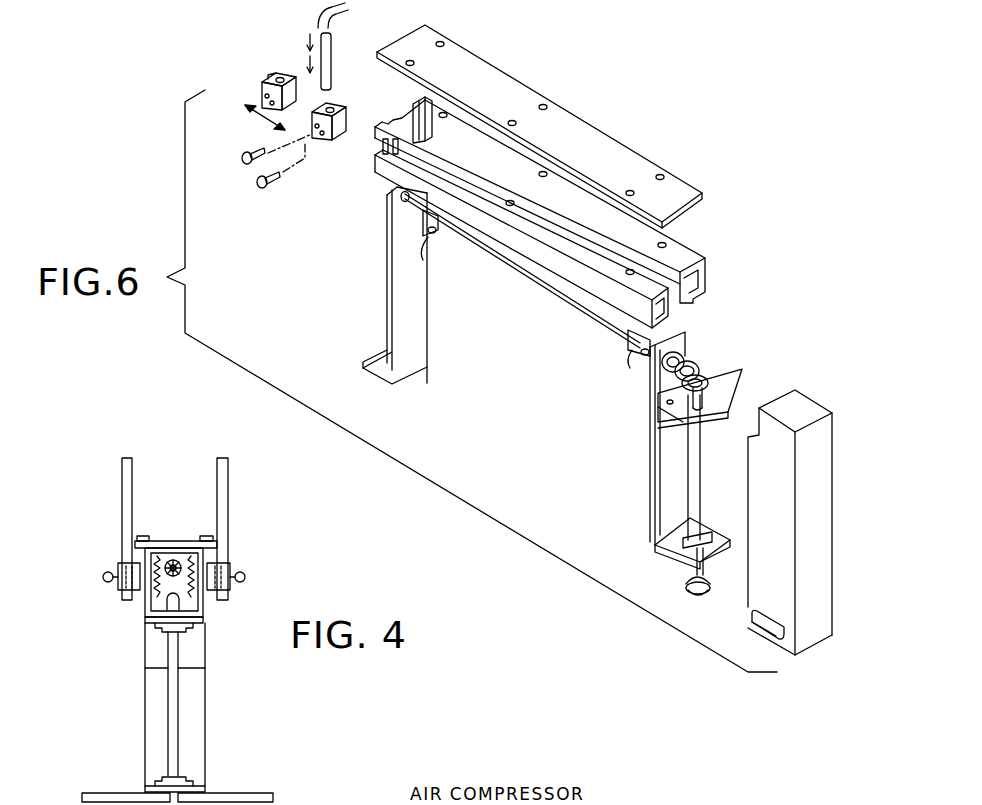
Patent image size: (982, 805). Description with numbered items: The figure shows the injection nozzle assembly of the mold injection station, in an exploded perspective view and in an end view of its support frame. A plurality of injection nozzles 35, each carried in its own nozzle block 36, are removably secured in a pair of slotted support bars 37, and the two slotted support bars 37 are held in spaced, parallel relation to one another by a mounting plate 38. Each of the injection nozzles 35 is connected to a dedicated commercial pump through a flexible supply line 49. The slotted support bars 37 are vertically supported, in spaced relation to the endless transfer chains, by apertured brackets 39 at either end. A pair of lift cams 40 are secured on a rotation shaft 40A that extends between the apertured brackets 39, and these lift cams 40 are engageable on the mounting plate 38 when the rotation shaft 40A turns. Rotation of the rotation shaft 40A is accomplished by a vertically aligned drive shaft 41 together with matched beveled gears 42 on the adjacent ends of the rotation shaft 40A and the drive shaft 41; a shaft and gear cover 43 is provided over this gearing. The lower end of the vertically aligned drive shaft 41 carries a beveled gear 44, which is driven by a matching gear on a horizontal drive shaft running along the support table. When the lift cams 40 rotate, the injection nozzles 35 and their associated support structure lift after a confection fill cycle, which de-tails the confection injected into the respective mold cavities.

In FIG. 6, the injection nozzle 35 is at (336, 48).
In FIG. 4, the injection nozzle 35 is at (226, 597).
In FIG. 6, the nozzle block 36 is at (262, 82).
In FIG. 4, the nozzle block 36 is at (222, 565).
In FIG. 6, the slotted support bar 37 is at (382, 167).
In FIG. 4, the slotted support bar 37 is at (138, 556).
In FIG. 6, the mounting plate 38 is at (598, 125).
In FIG. 4, the mounting plate 38 is at (172, 542).
In FIG. 6, the apertured bracket 39 is at (418, 350).
In FIG. 4, the apertured bracket 39 is at (195, 726).
In FIG. 6, the lift cam 40 is at (423, 250).
In FIG. 6, the rotation shaft 40A is at (553, 293).
In FIG. 6, the drive shaft 41 is at (702, 453).
In FIG. 4, the drive shaft 41 is at (178, 653).
In FIG. 6, the beveled gear 42 is at (698, 368).
In FIG. 6, the shaft and gear cover 43 is at (818, 461).
In FIG. 6, the beveled gear 44 is at (698, 596).
In FIG. 4, the flexible supply line 49 is at (226, 500).